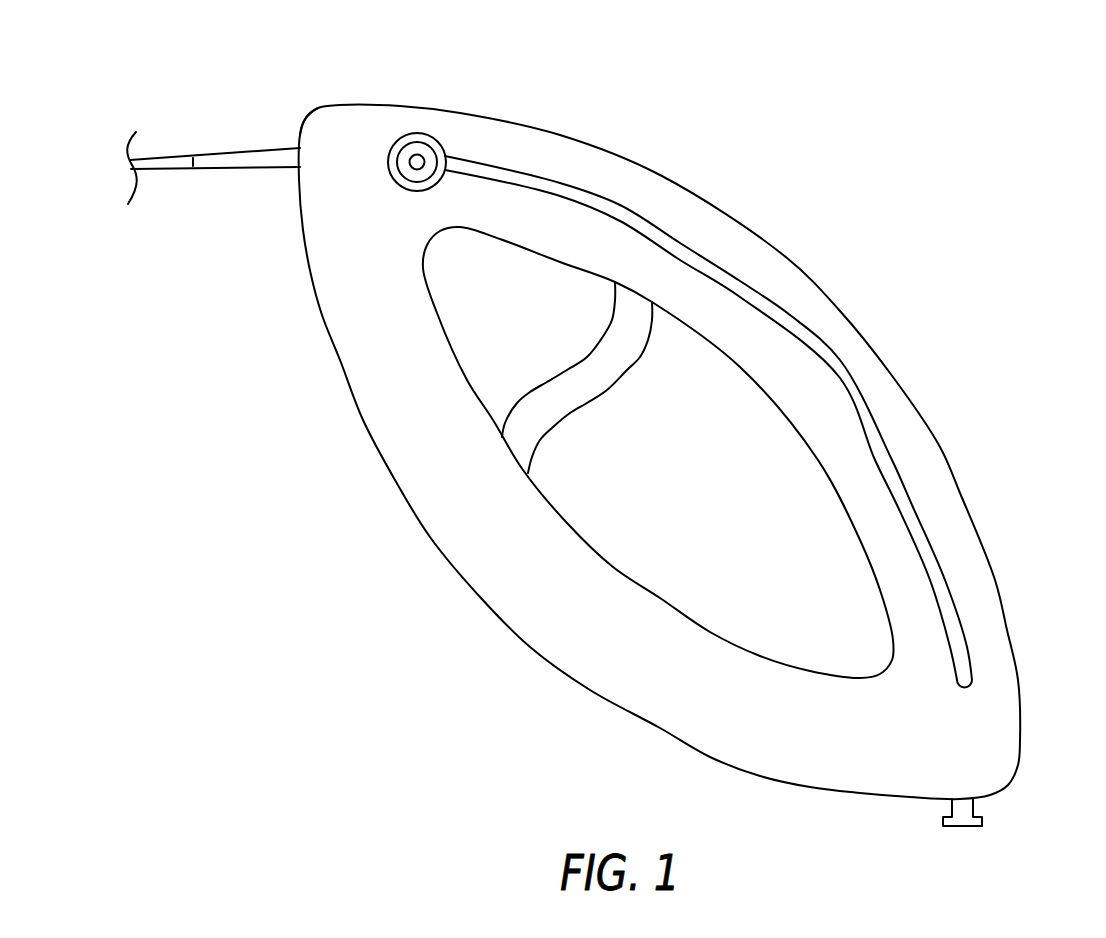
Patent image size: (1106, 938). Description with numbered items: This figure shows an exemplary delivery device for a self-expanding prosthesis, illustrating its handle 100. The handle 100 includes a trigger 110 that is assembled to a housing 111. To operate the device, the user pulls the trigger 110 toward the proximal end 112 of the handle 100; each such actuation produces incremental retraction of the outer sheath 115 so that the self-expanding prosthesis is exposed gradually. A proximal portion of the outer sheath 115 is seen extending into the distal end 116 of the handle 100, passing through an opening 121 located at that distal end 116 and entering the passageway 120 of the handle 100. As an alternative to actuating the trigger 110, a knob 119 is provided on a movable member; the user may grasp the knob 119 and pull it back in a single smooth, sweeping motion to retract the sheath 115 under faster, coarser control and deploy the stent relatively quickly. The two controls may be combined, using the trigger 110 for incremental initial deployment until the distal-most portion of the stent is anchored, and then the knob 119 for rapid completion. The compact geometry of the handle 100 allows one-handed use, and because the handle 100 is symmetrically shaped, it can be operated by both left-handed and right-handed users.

The handle 100 is at (612, 441).
The trigger 110 is at (597, 393).
The housing 111 is at (318, 218).
The proximal end 112 is at (1003, 797).
The outer sheath 115 is at (233, 153).
The distal end 116 is at (303, 117).
The knob 119 is at (417, 132).
The passageway 120 is at (915, 518).
The opening 121 is at (297, 168).